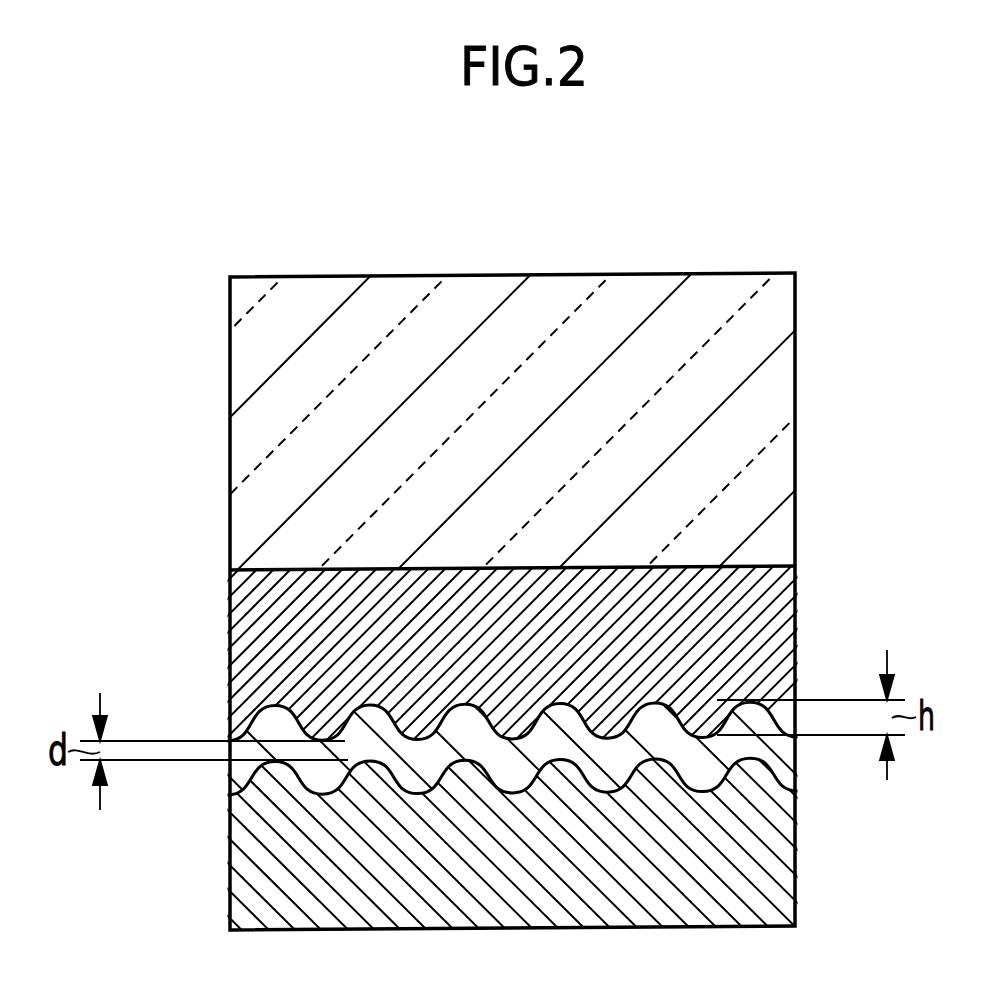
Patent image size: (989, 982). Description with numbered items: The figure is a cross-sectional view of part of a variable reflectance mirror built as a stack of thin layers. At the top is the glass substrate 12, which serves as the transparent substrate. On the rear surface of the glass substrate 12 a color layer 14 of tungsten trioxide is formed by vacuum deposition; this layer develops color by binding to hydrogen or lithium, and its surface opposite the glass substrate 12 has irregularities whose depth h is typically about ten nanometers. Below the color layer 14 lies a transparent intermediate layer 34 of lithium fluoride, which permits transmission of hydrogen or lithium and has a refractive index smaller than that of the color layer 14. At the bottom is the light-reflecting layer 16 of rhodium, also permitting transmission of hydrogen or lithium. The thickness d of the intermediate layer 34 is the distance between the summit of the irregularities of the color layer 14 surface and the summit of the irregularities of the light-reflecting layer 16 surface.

The glass substrate 12 is at (795, 419).
The color layer 14 is at (795, 598).
The intermediate layer 34 is at (772, 760).
The light-reflecting layer 16 is at (780, 873).